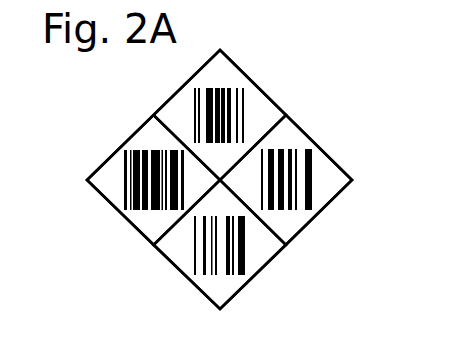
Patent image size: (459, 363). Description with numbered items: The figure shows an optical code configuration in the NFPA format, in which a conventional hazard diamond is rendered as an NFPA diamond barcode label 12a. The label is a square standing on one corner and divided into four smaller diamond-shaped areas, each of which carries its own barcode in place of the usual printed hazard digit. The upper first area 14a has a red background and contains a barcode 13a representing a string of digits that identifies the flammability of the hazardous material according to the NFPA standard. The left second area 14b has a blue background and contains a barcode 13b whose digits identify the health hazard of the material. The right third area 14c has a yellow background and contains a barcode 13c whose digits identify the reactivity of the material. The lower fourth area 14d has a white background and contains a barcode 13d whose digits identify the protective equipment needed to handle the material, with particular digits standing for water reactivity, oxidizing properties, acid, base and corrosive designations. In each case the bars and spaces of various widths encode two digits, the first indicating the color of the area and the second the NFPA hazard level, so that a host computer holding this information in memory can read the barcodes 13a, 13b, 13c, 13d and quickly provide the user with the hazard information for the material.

The NFPA diamond barcode label 12a is at (341, 82).
The barcode 13a is at (193, 96).
The barcode 13b is at (124, 163).
The barcode 13c is at (312, 199).
The barcode 13d is at (246, 265).
The first area 14a is at (256, 85).
The second area 14b is at (118, 211).
The third area 14c is at (317, 145).
The fourth area 14d is at (185, 276).